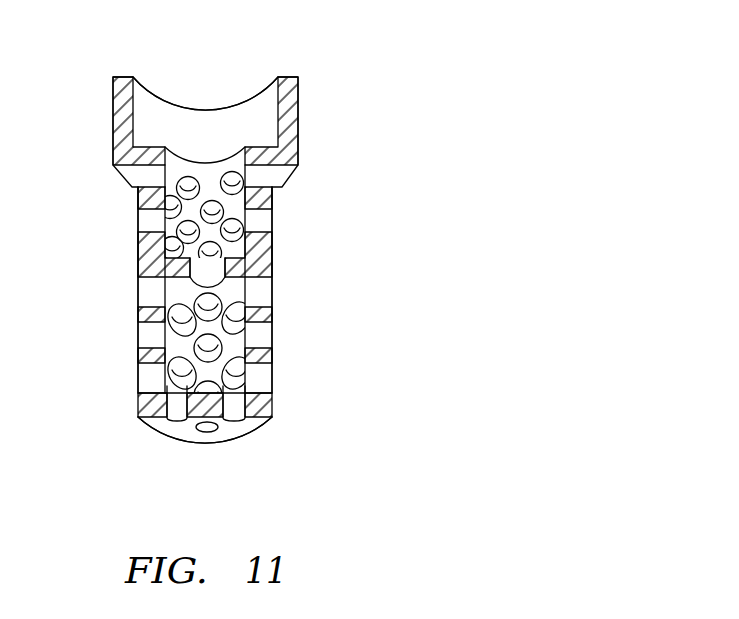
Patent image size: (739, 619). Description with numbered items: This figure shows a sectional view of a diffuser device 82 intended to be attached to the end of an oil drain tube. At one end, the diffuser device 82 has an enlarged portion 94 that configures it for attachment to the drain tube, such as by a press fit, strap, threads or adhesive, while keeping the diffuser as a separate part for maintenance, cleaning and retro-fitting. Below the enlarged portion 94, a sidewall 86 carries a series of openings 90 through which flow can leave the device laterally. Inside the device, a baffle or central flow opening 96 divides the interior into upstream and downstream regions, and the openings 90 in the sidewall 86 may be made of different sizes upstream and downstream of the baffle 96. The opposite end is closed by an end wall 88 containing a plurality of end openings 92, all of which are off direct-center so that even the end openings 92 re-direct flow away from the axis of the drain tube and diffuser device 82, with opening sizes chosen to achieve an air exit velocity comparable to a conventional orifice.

The diffuser device 82 is at (336, 86).
The enlarged portion 94 is at (120, 100).
The sidewall 86 is at (272, 355).
The openings 90 is at (272, 222).
The baffle 96 is at (199, 276).
The end wall 88 is at (258, 423).
The end openings 92 is at (207, 432).